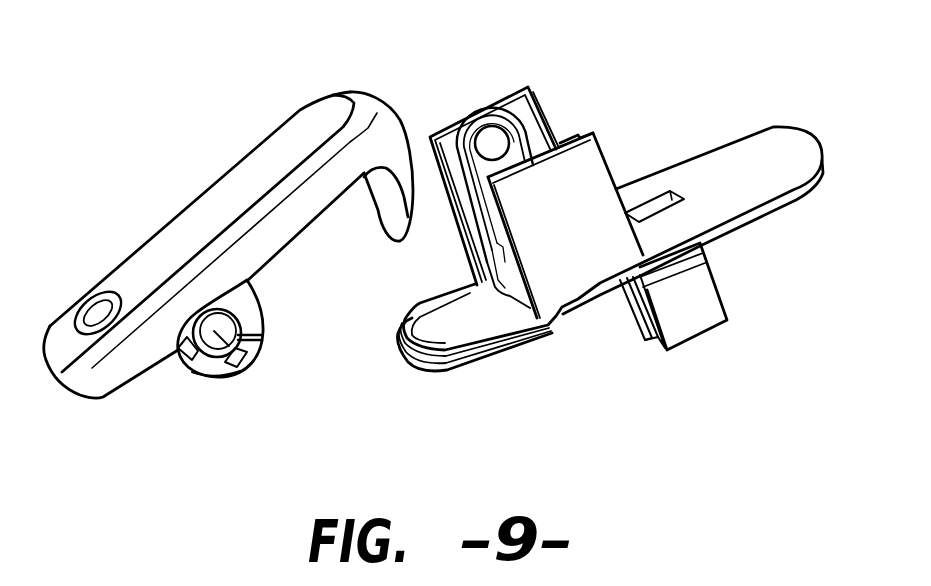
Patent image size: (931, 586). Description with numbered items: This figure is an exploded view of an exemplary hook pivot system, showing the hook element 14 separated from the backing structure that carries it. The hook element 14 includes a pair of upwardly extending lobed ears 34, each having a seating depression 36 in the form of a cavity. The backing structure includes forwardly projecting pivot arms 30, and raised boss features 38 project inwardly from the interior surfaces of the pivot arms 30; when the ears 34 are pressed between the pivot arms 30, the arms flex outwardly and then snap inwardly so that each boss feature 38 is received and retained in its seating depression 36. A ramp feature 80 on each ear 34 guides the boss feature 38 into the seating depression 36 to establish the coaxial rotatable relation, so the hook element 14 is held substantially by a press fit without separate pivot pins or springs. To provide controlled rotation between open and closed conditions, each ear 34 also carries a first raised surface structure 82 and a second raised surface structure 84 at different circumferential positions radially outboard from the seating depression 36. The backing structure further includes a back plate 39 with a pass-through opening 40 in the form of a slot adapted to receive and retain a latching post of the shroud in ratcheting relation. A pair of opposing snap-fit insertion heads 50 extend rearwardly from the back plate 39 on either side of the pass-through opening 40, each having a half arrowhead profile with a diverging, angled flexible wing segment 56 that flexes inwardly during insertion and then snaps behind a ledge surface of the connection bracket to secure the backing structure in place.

The hook element 14 is at (352, 90).
The pivot arms 30 is at (543, 108).
The lobed ears 34 is at (208, 370).
The seating depression 36 is at (236, 367).
The raised boss feature 38 is at (490, 138).
The back plate 39 is at (752, 220).
The pass-through opening 40 is at (657, 208).
The snap-fit insertion heads 50 is at (664, 355).
The flexible wing segment 56 is at (705, 303).
The ramp feature 80 is at (252, 310).
The first raised surface structure 82 is at (175, 353).
The second raised surface structure 84 is at (248, 352).